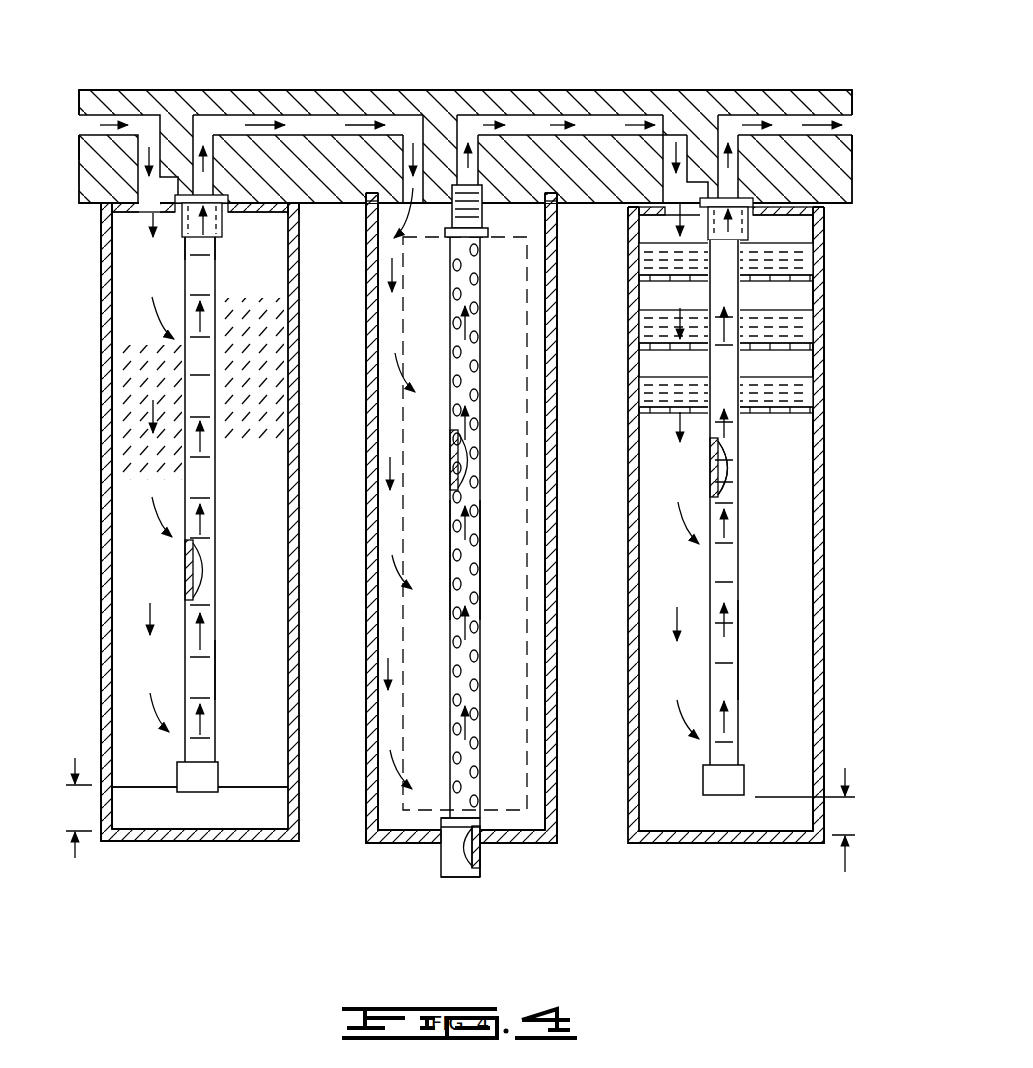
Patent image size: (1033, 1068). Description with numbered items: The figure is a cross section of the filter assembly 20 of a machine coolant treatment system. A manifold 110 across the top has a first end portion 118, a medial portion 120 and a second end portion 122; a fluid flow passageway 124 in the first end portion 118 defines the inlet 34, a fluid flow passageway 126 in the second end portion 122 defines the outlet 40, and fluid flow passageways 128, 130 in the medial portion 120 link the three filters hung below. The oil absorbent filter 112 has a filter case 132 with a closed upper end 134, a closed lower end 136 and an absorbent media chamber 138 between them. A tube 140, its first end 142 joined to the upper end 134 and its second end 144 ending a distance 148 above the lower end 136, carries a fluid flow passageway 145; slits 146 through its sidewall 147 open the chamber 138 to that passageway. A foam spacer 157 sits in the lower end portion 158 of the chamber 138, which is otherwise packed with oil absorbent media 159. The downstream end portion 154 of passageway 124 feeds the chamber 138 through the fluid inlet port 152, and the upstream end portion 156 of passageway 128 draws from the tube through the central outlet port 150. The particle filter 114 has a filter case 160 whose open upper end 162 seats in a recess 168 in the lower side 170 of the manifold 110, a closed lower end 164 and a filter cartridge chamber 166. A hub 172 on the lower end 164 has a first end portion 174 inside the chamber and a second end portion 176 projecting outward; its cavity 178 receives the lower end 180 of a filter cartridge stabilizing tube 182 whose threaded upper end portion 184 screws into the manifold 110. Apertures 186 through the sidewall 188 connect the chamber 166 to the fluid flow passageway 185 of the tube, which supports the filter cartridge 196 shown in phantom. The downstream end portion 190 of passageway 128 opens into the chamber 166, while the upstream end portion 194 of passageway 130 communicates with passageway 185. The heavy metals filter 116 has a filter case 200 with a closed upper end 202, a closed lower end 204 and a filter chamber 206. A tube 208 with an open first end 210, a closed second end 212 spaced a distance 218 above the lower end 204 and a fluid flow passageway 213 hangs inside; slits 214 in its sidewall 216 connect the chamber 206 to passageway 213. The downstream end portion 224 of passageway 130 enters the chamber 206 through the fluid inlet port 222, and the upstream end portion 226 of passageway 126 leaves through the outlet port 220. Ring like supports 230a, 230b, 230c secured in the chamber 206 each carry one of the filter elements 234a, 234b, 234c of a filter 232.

The filter assembly 20 is at (780, 42).
The inlet 34 is at (80, 122).
The outlet 40 is at (852, 130).
The manifold 110 is at (626, 94).
The oil absorbent filter 112 is at (100, 540).
The particle filter 114 is at (366, 624).
The heavy metals filter 116 is at (626, 624).
The first end portion 118 is at (91, 100).
The medial portion 120 is at (443, 112).
The second end portion 122 is at (840, 105).
The fluid flow passageway 124 is at (136, 118).
The fluid flow passageway 126 is at (793, 128).
The fluid flow passageway 128 is at (318, 118).
The fluid flow passageway 130 is at (590, 124).
The filter case 132 is at (105, 638).
The closed upper end 134 is at (140, 212).
The closed lower end 136 is at (150, 842).
The absorbent media chamber 138 is at (128, 580).
The tube 140 is at (186, 655).
The first end 142 is at (225, 254).
The second end 144 is at (196, 787).
The fluid flow passageway 145 is at (188, 576).
The slits 146 is at (204, 458).
The sidewall 147 is at (205, 682).
The distance 148 is at (72, 848).
The outlet port 150 is at (210, 196).
The fluid inlet port 152 is at (160, 225).
The downstream end portion 154 is at (138, 183).
The upstream end portion 156 is at (196, 175).
The foam spacer 157 is at (227, 810).
The lower end portion 158 is at (292, 812).
The oil absorbent media 159 is at (136, 385).
The filter case 160 is at (375, 558).
The open upper end 162 is at (555, 215).
The closed lower end 164 is at (530, 843).
The filter cartridge chamber 166 is at (388, 315).
The recess 168 is at (255, 190).
The lower side 170 is at (574, 206).
The hub 172 is at (440, 857).
The first end portion 174 is at (450, 826).
The second end portion 176 is at (475, 878).
The cavity 178 is at (468, 860).
The lower end 180 is at (470, 862).
The filter cartridge stabilizing tube 182 is at (480, 622).
The threaded upper end portion 184 is at (472, 200).
The fluid flow passageway 185 is at (450, 457).
The apertures 186 is at (478, 366).
The sidewall 188 is at (467, 556).
The downstream end portion 190 is at (402, 188).
The upstream end portion 194 is at (476, 158).
The filter cartridge 196 is at (403, 575).
The filter case 200 is at (825, 724).
The closed upper end 202 is at (825, 202).
The closed lower end 204 is at (748, 845).
The filter chamber 206 is at (790, 518).
The tube 208 is at (740, 642).
The open first end 210 is at (755, 225).
The closed second end 212 is at (720, 797).
The fluid flow passageway 213 is at (712, 460).
The slits 214 is at (738, 590).
The sidewall 216 is at (716, 600).
The distance 218 is at (846, 856).
The outlet port 220 is at (777, 197).
The fluid inlet port 222 is at (672, 222).
The downstream end portion 224 is at (664, 192).
The upstream end portion 226 is at (721, 182).
The ring like support 230a is at (642, 283).
The ring like support 230b is at (642, 350).
The ring like support 230c is at (642, 413).
The filter 232 is at (810, 322).
The filter element 234a is at (812, 262).
The filter element 234b is at (805, 335).
The filter element 234c is at (805, 395).